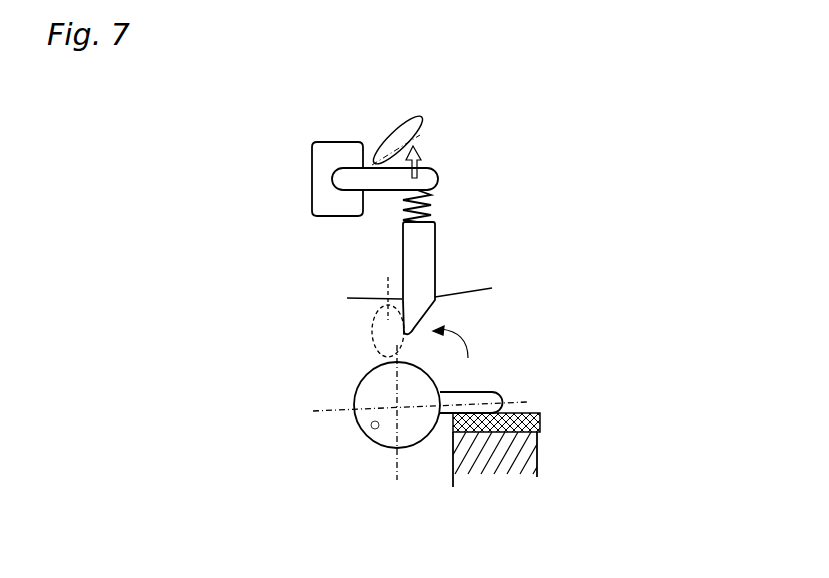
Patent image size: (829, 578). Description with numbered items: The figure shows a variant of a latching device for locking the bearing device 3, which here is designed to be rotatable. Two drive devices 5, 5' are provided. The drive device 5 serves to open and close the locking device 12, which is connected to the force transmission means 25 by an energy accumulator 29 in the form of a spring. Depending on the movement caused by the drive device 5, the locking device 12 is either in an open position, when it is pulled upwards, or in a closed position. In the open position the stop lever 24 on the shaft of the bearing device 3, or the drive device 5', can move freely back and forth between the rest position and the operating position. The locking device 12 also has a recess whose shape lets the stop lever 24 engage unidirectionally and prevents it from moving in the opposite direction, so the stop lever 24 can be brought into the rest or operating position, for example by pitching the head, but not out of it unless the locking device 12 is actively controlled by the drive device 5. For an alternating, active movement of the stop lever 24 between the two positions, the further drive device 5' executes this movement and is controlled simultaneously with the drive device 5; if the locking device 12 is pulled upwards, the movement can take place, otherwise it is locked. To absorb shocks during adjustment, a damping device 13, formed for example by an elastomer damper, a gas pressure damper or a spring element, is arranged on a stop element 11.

The bearing device 3 is at (340, 429).
The drive device 5 is at (361, 135).
The drive device 5' is at (342, 489).
The stop element 11 is at (530, 455).
The locking device 12 is at (417, 268).
The damping device 13 is at (540, 418).
The stop lever 24 is at (490, 386).
The force transmission means 25 is at (392, 180).
The energy accumulator 29 is at (438, 190).